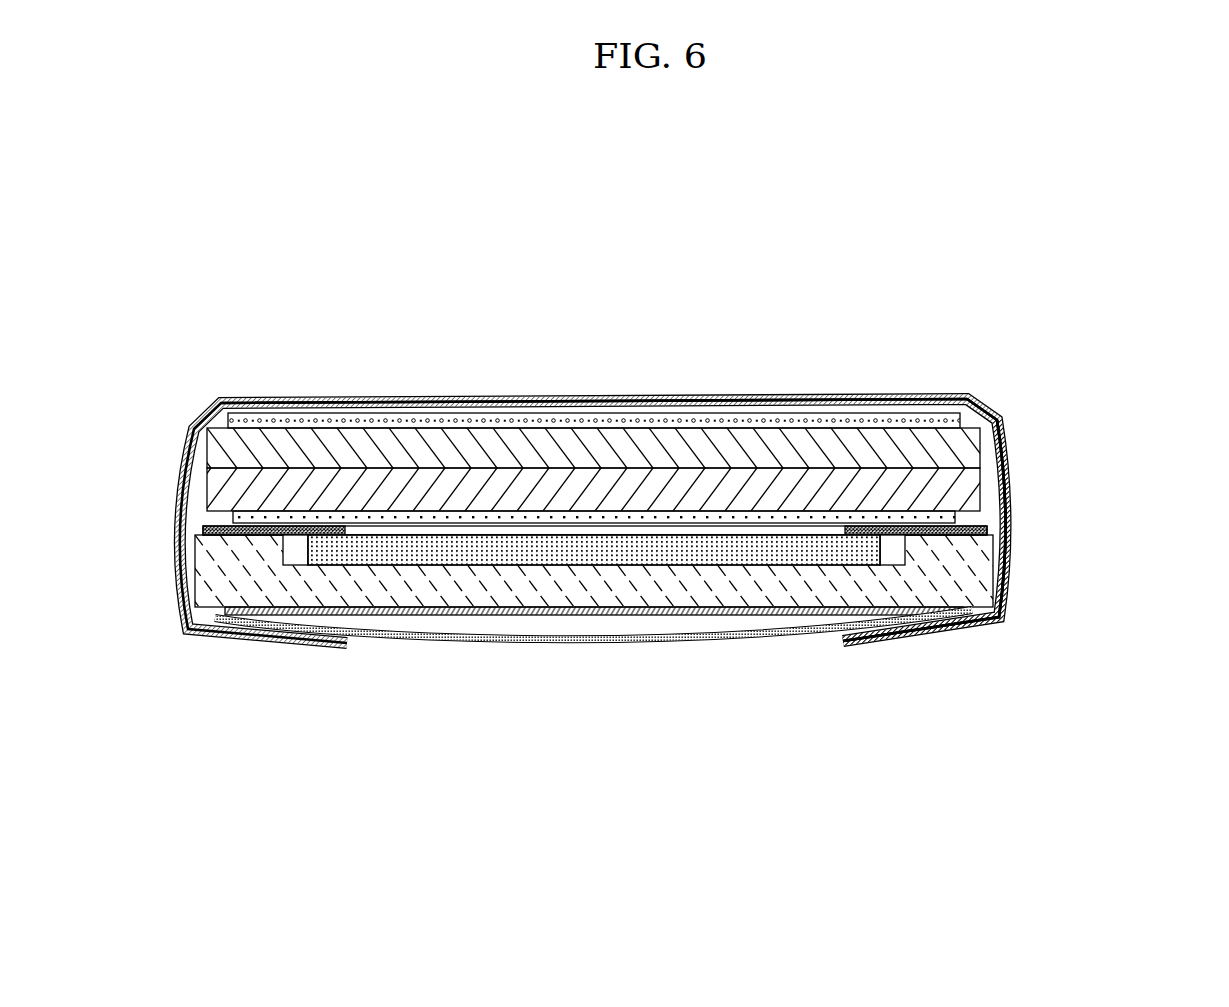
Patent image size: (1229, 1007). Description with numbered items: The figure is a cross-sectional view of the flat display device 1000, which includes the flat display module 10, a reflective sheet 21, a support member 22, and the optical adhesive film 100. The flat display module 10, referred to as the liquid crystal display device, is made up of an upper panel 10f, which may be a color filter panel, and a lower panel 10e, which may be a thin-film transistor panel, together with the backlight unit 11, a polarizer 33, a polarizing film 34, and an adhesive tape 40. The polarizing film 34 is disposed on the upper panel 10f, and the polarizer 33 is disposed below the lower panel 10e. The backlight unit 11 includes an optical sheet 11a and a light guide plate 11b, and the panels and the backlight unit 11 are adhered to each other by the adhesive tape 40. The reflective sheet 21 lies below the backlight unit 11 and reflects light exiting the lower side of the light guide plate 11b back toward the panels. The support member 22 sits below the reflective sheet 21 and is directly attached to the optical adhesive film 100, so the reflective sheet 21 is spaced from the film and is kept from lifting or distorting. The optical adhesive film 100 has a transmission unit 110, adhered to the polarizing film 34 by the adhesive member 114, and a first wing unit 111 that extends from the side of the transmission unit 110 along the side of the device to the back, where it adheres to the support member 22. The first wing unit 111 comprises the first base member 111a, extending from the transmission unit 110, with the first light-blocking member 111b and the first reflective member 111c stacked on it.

The flat display device 1000 is at (887, 291).
The optical adhesive film 100 is at (1150, 363).
The transmission unit 110 is at (905, 393).
The adhesive member 114 is at (993, 421).
The first wing unit 111 is at (993, 530).
The first base member 111a is at (1012, 490).
The first light-blocking member 111b is at (1012, 508).
The first reflective member 111c is at (1012, 518).
The flat display module 10 is at (845, 298).
The upper panel 10f is at (303, 445).
The lower panel 10e is at (351, 483).
The polarizing film 34 is at (484, 420).
The polarizer 33 is at (549, 518).
The adhesive tape 40 is at (862, 518).
The backlight unit 11 is at (720, 334).
The optical sheet 11a is at (645, 545).
The light guide plate 11b is at (698, 585).
The reflective sheet 21 is at (393, 609).
The support member 22 is at (420, 639).